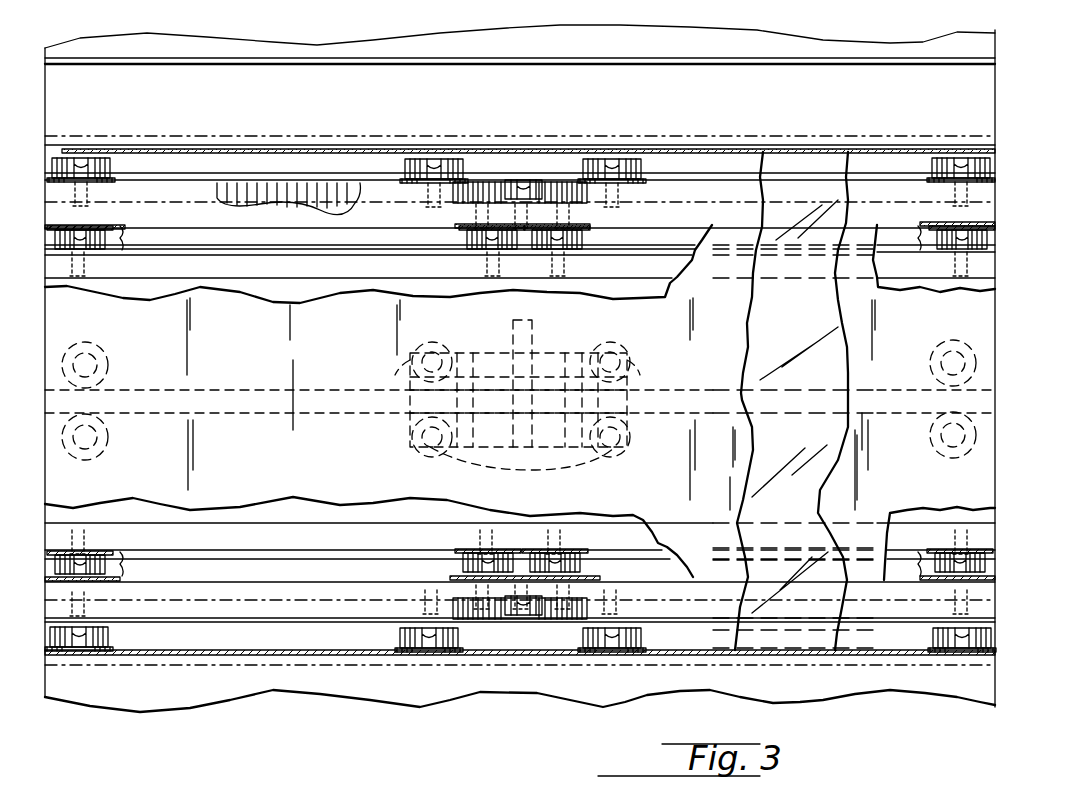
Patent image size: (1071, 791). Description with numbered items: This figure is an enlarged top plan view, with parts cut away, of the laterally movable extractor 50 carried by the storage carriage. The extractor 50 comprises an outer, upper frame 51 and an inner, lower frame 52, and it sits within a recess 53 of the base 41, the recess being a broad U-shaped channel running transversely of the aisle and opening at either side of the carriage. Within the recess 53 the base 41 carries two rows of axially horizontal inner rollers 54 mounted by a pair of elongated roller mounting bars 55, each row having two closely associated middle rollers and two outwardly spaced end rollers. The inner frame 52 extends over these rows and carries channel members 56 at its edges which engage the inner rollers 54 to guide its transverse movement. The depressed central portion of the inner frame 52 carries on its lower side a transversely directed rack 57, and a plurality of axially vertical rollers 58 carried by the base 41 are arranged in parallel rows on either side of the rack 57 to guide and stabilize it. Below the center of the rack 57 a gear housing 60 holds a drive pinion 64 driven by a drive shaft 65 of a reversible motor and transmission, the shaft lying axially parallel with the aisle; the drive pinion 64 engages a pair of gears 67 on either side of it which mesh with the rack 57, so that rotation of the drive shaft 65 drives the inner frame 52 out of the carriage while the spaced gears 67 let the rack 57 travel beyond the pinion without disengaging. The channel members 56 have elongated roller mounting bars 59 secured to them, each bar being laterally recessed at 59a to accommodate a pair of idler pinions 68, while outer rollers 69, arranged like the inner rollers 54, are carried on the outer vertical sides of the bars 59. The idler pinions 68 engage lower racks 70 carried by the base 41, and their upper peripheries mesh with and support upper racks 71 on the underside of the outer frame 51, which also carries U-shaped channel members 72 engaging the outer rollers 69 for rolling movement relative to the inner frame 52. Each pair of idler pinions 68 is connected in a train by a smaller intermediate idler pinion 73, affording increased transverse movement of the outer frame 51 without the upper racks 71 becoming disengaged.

The base 41 is at (163, 88).
The extractor 50 is at (1022, 176).
The outer frame 51 is at (821, 325).
The inner frame 52 is at (320, 344).
The recess 53 is at (727, 150).
The inner rollers 54 is at (55, 240).
The roller mounting bars 55 is at (272, 267).
The channel members 56 is at (184, 237).
The rack 57 is at (695, 398).
The axially vertical rollers 58 is at (106, 360).
The roller mounting bars 59 is at (375, 185).
The lateral recess 59a is at (525, 182).
The gear housing 60 is at (410, 420).
The drive pinion 64 is at (535, 392).
The drive shaft 65 is at (512, 330).
The gears 67 is at (410, 382).
The idler pinions 68 is at (470, 186).
The outer rollers 69 is at (84, 160).
The lower racks 70 is at (275, 186).
The upper racks 71 is at (170, 202).
The U-shaped channel members 72 is at (264, 150).
The intermediate idler pinion 73 is at (540, 190).